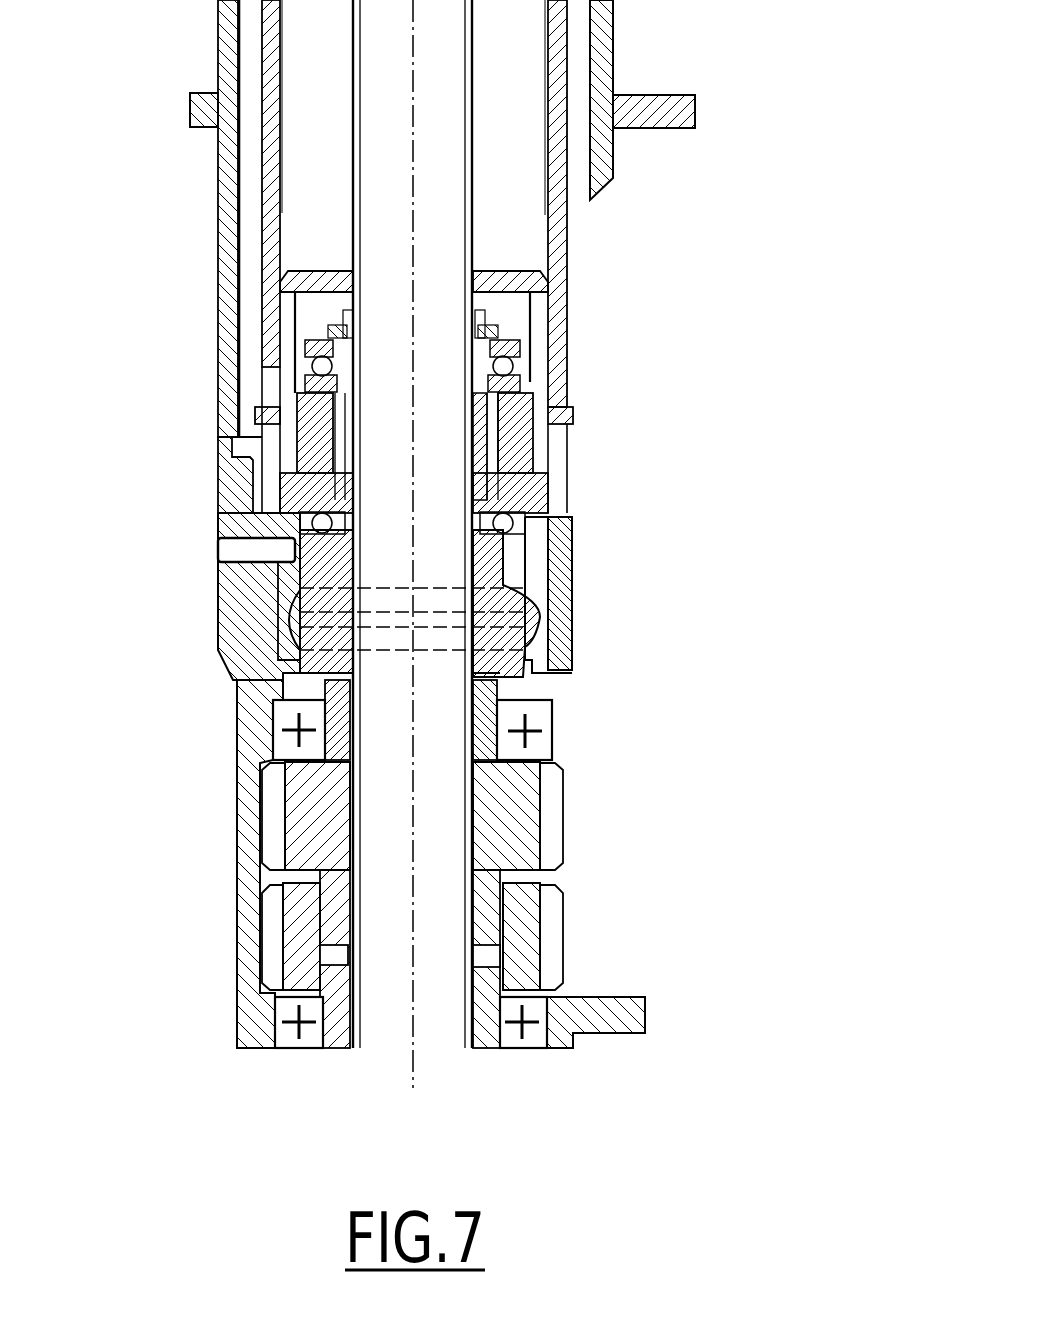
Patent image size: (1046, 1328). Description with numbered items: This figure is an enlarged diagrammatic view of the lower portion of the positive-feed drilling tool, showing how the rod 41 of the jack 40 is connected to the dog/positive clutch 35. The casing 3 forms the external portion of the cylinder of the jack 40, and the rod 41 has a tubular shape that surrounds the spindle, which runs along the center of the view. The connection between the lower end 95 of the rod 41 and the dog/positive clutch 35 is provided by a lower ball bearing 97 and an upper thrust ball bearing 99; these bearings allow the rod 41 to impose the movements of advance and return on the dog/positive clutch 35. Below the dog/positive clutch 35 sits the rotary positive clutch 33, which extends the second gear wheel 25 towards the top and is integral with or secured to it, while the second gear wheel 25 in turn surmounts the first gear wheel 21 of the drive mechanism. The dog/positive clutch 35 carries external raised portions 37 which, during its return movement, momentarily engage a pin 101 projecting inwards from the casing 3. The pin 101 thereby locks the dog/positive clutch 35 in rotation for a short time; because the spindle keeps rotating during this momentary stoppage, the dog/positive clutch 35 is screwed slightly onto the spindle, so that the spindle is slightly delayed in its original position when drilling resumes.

The casing 3 is at (198, 40).
The jack 40 is at (226, 244).
The rod 41 is at (557, 22).
The upper thrust ball bearing 99 is at (536, 352).
The lower end of the rod 95 is at (533, 493).
The lower ball bearing 97 is at (535, 600).
The dog/positive clutch 35 is at (510, 638).
The external raised portions 37 is at (297, 594).
The pin 101 is at (218, 550).
The rotary positive clutch 33 is at (487, 738).
The second gear wheel 25 is at (507, 832).
The first gear wheel 21 is at (525, 938).